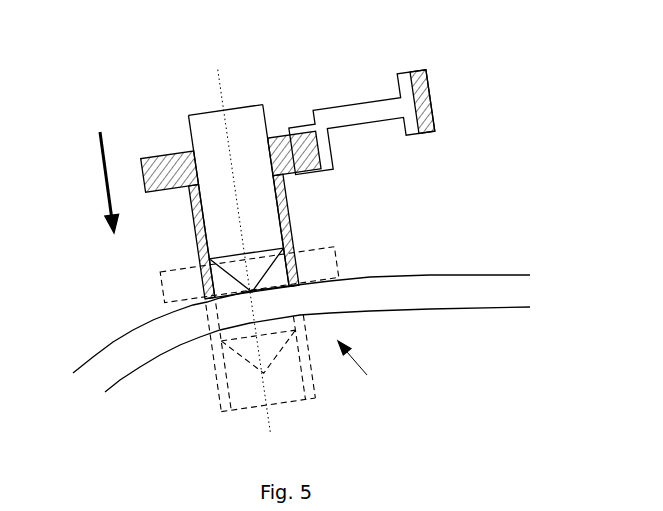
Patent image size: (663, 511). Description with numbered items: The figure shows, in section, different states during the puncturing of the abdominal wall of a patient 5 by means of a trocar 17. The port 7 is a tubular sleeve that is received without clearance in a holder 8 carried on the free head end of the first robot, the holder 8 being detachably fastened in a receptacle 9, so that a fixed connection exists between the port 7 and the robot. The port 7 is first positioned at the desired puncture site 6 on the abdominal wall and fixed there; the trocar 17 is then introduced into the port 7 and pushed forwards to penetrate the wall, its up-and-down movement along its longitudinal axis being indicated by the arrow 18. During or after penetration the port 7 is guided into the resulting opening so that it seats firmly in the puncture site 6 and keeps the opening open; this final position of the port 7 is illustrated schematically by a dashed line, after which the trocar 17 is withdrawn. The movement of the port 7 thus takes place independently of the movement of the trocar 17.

The patient 5 is at (455, 290).
The puncture site 6 is at (359, 373).
The port 7 is at (153, 157).
The holder 8 is at (339, 107).
The receptacle 9 is at (433, 109).
The trocar 17 is at (257, 211).
The arrow 18 is at (97, 187).